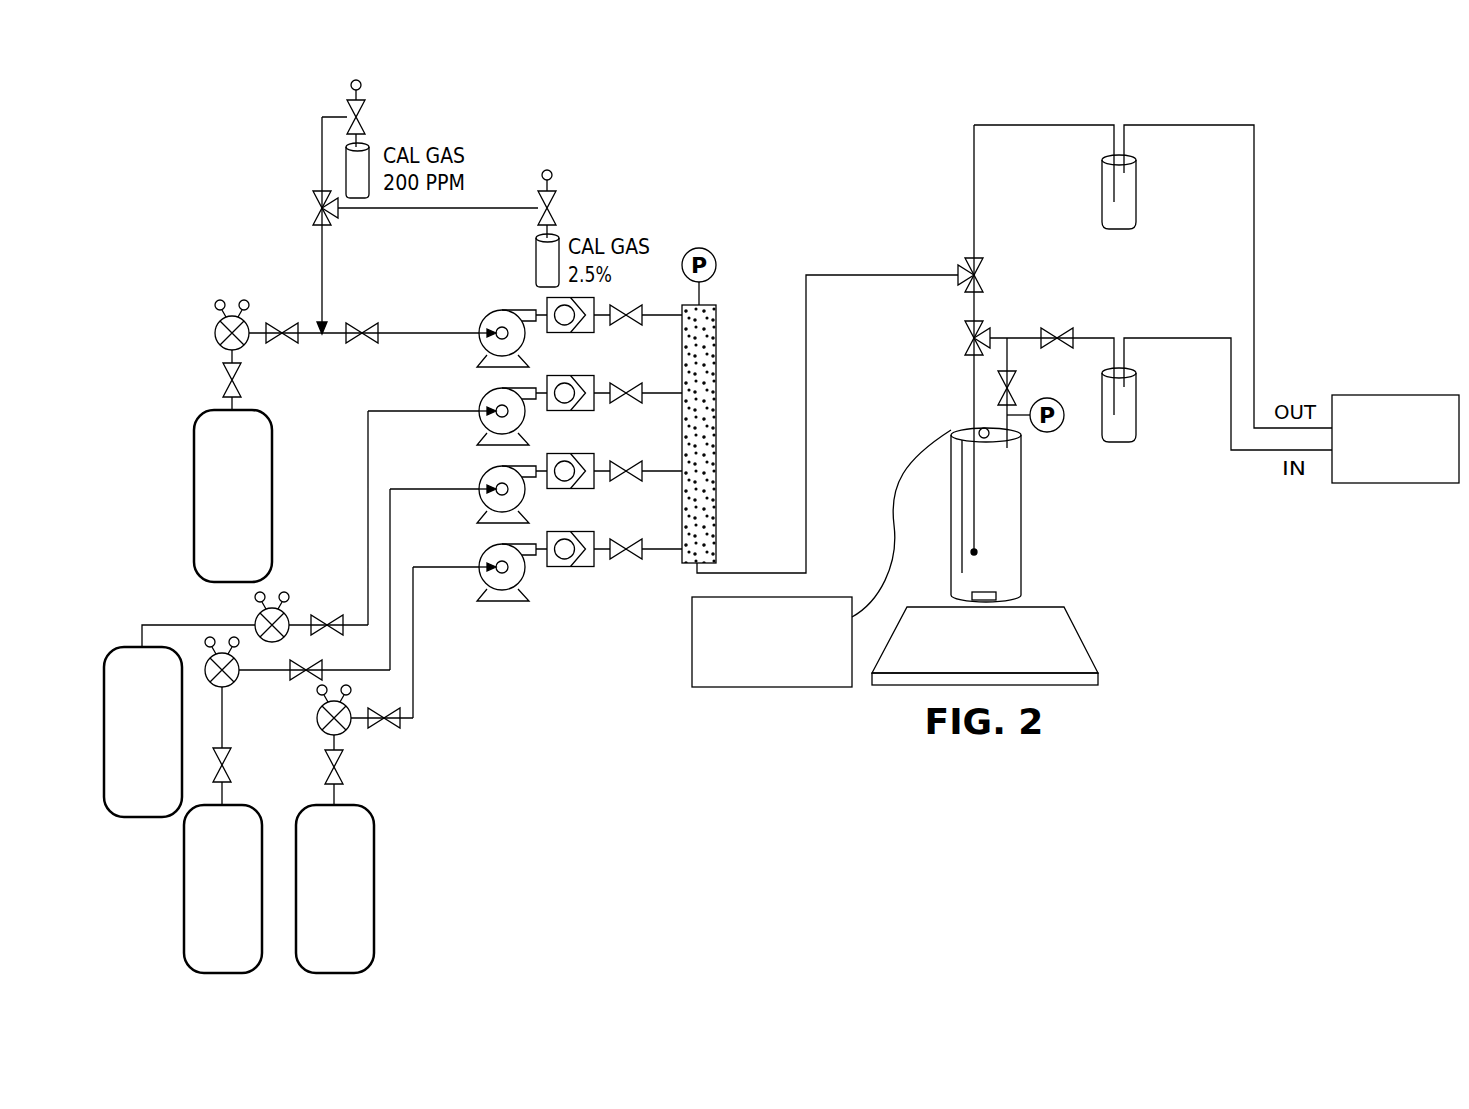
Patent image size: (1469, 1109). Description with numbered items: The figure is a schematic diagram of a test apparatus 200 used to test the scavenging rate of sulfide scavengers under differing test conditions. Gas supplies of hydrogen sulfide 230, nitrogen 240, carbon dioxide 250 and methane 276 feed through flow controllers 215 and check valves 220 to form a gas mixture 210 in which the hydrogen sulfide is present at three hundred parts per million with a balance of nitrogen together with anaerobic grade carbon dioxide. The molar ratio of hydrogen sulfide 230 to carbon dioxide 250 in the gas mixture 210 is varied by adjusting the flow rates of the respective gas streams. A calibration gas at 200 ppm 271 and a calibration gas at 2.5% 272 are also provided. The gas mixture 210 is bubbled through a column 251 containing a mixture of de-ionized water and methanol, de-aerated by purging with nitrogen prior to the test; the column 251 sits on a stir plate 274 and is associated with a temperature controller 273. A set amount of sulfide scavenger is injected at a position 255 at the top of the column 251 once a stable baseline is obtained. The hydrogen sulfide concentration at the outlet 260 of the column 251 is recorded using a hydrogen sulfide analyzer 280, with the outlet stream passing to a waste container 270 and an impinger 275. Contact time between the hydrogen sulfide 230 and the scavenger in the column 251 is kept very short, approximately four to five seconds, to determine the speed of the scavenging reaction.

The test apparatus 200 is at (871, 213).
The gas mixture 210 is at (717, 432).
The flow controllers 215 is at (482, 312).
The check valves 220 is at (595, 330).
The hydrogen sulfide 230 is at (195, 496).
The nitrogen 240 is at (133, 646).
The carbon dioxide 250 is at (185, 889).
The column 251 is at (1022, 515).
The position 255 is at (982, 427).
The outlet 260 is at (1168, 338).
The waste container 270 is at (1137, 192).
The calibration gas at 200 ppm 271 is at (362, 122).
The calibration gas at 2.5% 272 is at (553, 213).
The temperature controller 273 is at (770, 688).
The stir plate 274 is at (1083, 640).
The impinger 275 is at (1137, 408).
The methane 276 is at (375, 889).
The hydrogen sulfide analyzer 280 is at (1413, 394).